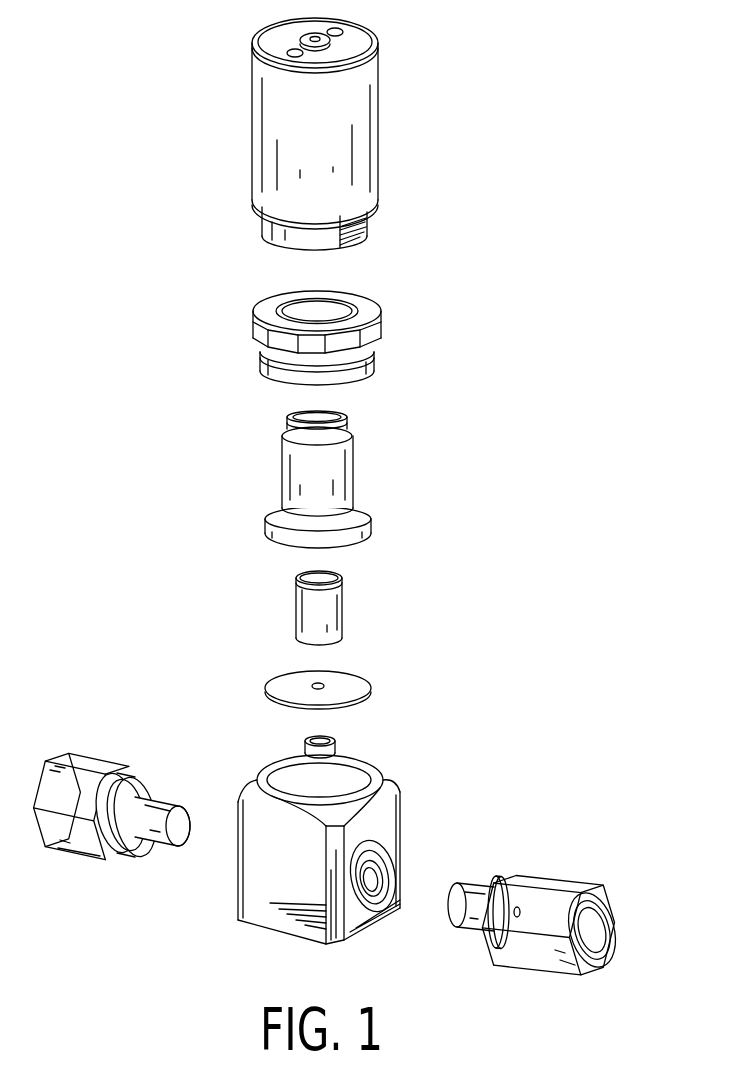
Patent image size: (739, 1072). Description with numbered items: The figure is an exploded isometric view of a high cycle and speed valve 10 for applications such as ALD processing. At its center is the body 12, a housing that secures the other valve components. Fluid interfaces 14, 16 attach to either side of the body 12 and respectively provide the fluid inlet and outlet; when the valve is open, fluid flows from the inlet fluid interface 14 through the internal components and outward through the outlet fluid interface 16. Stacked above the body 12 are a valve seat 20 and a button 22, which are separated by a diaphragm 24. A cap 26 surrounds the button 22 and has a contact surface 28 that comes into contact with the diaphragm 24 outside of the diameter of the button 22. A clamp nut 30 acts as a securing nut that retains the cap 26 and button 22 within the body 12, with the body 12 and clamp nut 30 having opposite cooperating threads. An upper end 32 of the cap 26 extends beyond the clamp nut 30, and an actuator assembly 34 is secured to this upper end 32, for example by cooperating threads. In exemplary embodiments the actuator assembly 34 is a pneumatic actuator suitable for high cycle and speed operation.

The high cycle and speed (HCS) valve 10 is at (102, 138).
The body 12 is at (396, 806).
The fluid interface 14 is at (525, 962).
The fluid interface 16 is at (45, 842).
The valve seat 20 is at (305, 752).
The button 22 is at (336, 610).
The diaphragm 24 is at (358, 681).
The cap 26 is at (282, 487).
The contact surface 28 is at (280, 538).
The clamp nut 30 is at (253, 338).
The upper end 32 is at (345, 433).
The actuator assembly 34 is at (373, 128).